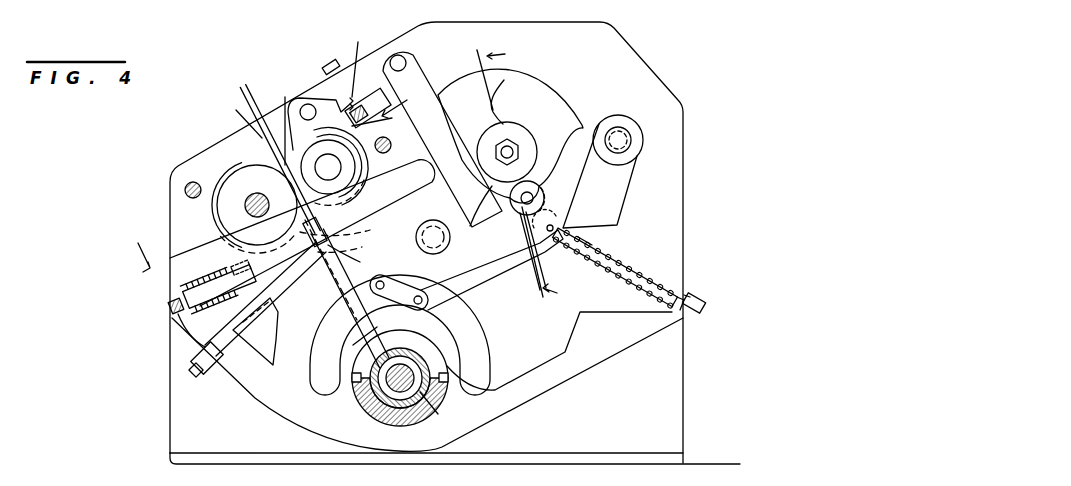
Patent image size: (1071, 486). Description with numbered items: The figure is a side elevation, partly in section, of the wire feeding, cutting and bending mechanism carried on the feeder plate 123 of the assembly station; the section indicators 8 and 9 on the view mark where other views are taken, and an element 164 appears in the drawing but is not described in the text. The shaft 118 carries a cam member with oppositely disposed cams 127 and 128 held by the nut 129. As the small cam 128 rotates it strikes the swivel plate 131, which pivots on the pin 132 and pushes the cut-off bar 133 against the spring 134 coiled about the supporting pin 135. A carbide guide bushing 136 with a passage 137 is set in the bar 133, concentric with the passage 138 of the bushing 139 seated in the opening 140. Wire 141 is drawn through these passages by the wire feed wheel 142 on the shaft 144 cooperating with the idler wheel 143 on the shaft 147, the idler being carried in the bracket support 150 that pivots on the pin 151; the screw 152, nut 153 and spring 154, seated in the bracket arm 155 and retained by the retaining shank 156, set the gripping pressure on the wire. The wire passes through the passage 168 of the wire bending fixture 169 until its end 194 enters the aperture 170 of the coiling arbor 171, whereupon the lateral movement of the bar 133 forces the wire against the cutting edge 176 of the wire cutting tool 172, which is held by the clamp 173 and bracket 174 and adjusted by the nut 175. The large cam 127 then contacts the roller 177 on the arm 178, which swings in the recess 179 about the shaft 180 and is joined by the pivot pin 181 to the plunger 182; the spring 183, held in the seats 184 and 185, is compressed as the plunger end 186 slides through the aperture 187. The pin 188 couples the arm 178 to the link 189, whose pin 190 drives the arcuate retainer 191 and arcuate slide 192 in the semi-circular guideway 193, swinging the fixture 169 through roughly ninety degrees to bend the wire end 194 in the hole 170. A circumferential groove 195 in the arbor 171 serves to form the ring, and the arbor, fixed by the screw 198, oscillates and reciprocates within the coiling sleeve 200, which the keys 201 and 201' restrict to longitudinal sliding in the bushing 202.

The section line 8- 8 is at (270, 181).
The section line 9- 9 is at (526, 172).
The shaft 118 is at (503, 147).
The feeder plate 123 is at (455, 232).
The large cam 127 is at (529, 93).
The small cam 128 is at (491, 185).
The nut 129 is at (514, 141).
The swivel plate 131 is at (432, 96).
The pin 132 is at (404, 58).
The cut-off bar 133 is at (382, 197).
The spring 134 is at (221, 302).
The supporting pin 135 is at (175, 315).
The carbide guide bushing 136 is at (353, 231).
The longitudinal passage 137 is at (351, 270).
The passage 138 is at (272, 116).
The bushing 139 is at (256, 150).
The opening 140 is at (234, 118).
The wire 141 is at (244, 81).
The wire feed wheel 142 is at (232, 211).
The idler wheel 143 is at (356, 178).
The shaft 144 is at (178, 257).
The shaft 147 is at (328, 166).
The bracket support 150 is at (339, 108).
The pin 151 is at (316, 116).
The screw 152 is at (333, 54).
The nut 153 is at (326, 69).
The spring 154 is at (380, 100).
The bracket arm 155 is at (393, 118).
The retaining shank 156 is at (367, 73).
The bearing 164 is at (440, 238).
The longitudinal passage 168 is at (346, 292).
The wire bending fixture 169 is at (334, 304).
The aperture 170 is at (370, 381).
The coiling arbor 171 is at (400, 410).
The wire cutting tool 172 is at (313, 258).
The clamp 173 is at (276, 370).
The bracket 174 is at (220, 365).
The nut 175 is at (198, 376).
The cutting edge 176 is at (360, 258).
The roller 177 is at (535, 190).
The arm 178 is at (536, 263).
The non-geometrical recess 179 is at (633, 192).
The shaft 180 is at (622, 138).
The pivot pin 181 is at (551, 225).
The plunger 182 is at (616, 268).
The spring 183 is at (586, 242).
The seat 184 is at (546, 248).
The seat 185 is at (672, 308).
The plunger end 186 is at (704, 308).
The aperture 187 is at (688, 297).
The pin 188 is at (424, 300).
The link 189 is at (405, 278).
The pin 190 is at (381, 296).
The arcuate retainer 191 is at (344, 316).
The arcuate slide 192 is at (326, 343).
The semi-circular guideway 193 is at (321, 382).
The wire end 194 is at (399, 354).
The groove 195 is at (414, 348).
The screw 198 is at (442, 386).
The coiling sleeve 200 is at (386, 396).
The key 201 is at (337, 397).
The key 201' is at (559, 362).
The bushing 202 is at (440, 417).